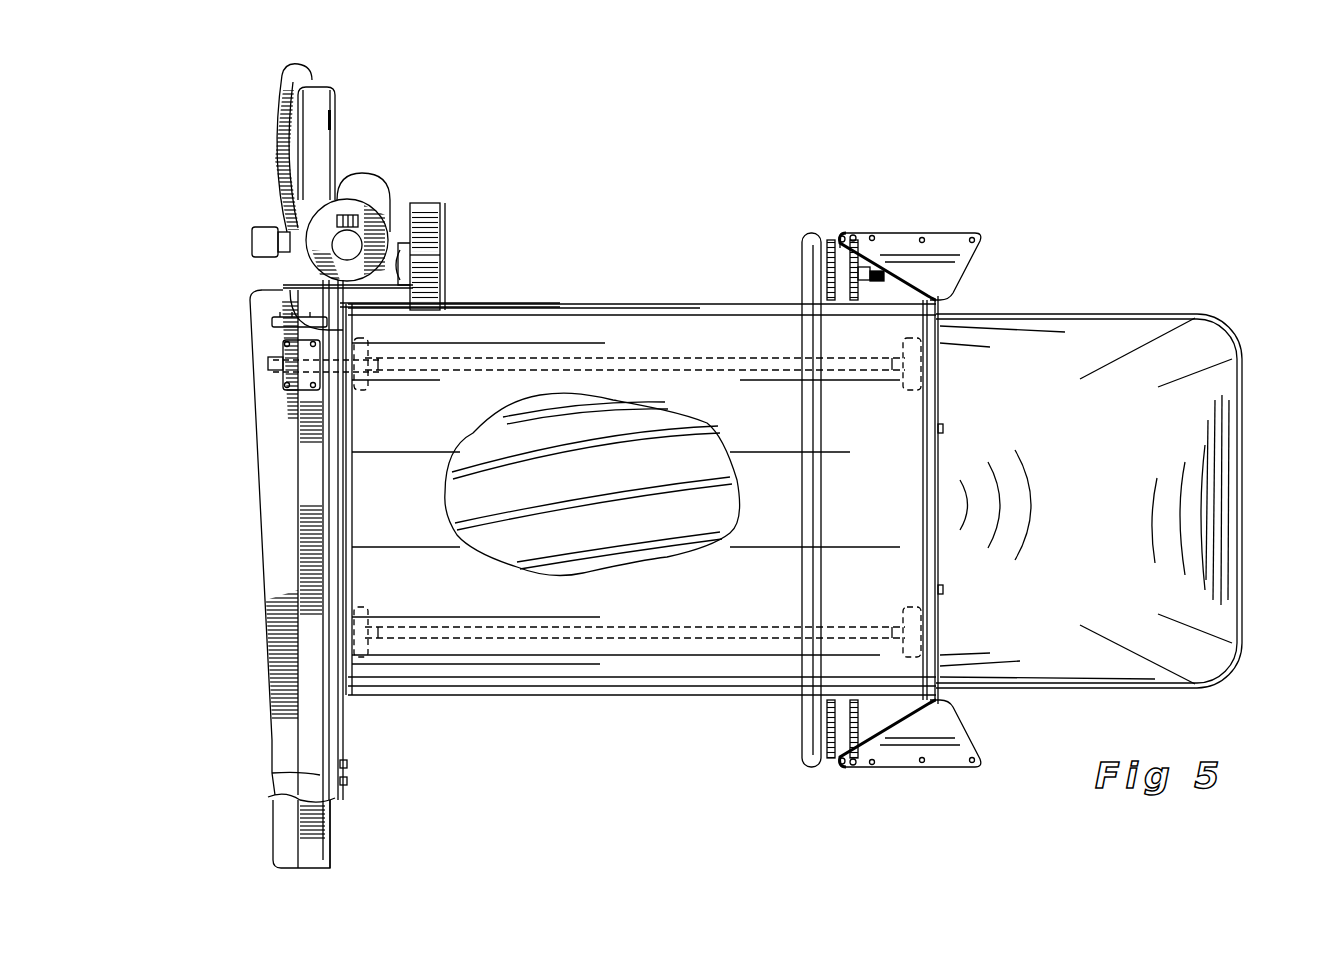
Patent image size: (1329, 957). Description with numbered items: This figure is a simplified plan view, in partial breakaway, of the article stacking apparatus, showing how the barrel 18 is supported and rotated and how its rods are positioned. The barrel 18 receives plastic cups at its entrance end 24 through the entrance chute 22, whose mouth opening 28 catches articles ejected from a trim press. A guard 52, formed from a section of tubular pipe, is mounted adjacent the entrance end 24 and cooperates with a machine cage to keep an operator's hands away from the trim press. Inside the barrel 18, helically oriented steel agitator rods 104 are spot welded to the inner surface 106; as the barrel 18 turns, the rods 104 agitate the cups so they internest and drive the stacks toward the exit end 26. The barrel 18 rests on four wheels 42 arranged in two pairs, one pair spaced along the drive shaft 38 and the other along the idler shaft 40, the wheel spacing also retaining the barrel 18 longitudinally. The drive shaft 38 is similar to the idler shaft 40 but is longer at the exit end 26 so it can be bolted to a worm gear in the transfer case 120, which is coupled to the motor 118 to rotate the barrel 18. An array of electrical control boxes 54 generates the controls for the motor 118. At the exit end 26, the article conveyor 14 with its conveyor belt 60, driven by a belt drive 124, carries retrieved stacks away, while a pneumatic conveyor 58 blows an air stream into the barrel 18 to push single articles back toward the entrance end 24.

The article conveyor 14 is at (262, 78).
The barrel 18 is at (567, 320).
The entrance chute 22 is at (1135, 312).
The entrance end 24 is at (1010, 343).
The exit end 26 is at (318, 492).
The mouth opening 28 is at (1140, 420).
The drive shaft 38 is at (485, 355).
The idler shaft 40 is at (468, 640).
The wheels 42 is at (368, 352).
The guard 52 is at (806, 762).
The array of electrical control boxes 54 is at (432, 205).
The pneumatic conveyor 58 is at (360, 198).
The conveyor belt 60 is at (320, 108).
The agitator rods 104 is at (512, 462).
The inner surface 106 is at (638, 477).
The motor 118 is at (262, 307).
The transfer case 120 is at (262, 372).
The belt drive 124 is at (272, 116).